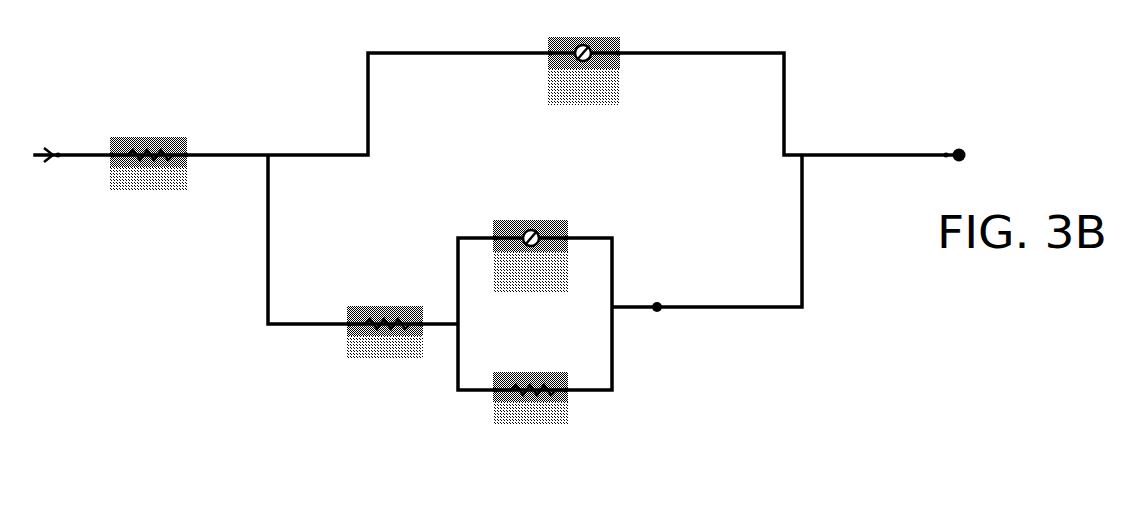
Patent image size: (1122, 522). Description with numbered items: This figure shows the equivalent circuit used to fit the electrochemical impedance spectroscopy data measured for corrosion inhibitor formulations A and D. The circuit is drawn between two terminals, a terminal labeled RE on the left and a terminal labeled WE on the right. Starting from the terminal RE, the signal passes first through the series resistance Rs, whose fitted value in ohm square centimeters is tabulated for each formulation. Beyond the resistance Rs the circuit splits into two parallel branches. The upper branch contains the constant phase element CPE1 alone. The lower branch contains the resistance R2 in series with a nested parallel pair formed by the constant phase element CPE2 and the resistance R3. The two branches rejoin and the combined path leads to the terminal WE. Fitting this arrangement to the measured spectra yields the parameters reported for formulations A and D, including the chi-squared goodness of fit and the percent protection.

The reference electrode terminal RE is at (45, 164).
The Rs resistance Rs is at (149, 164).
The constant phase element 1 CPE1 is at (584, 71).
The resistor R2 is at (385, 332).
The constant phase element 2 CPE2 is at (531, 256).
The resistor R3 is at (531, 398).
The working electrode terminal WE is at (956, 166).